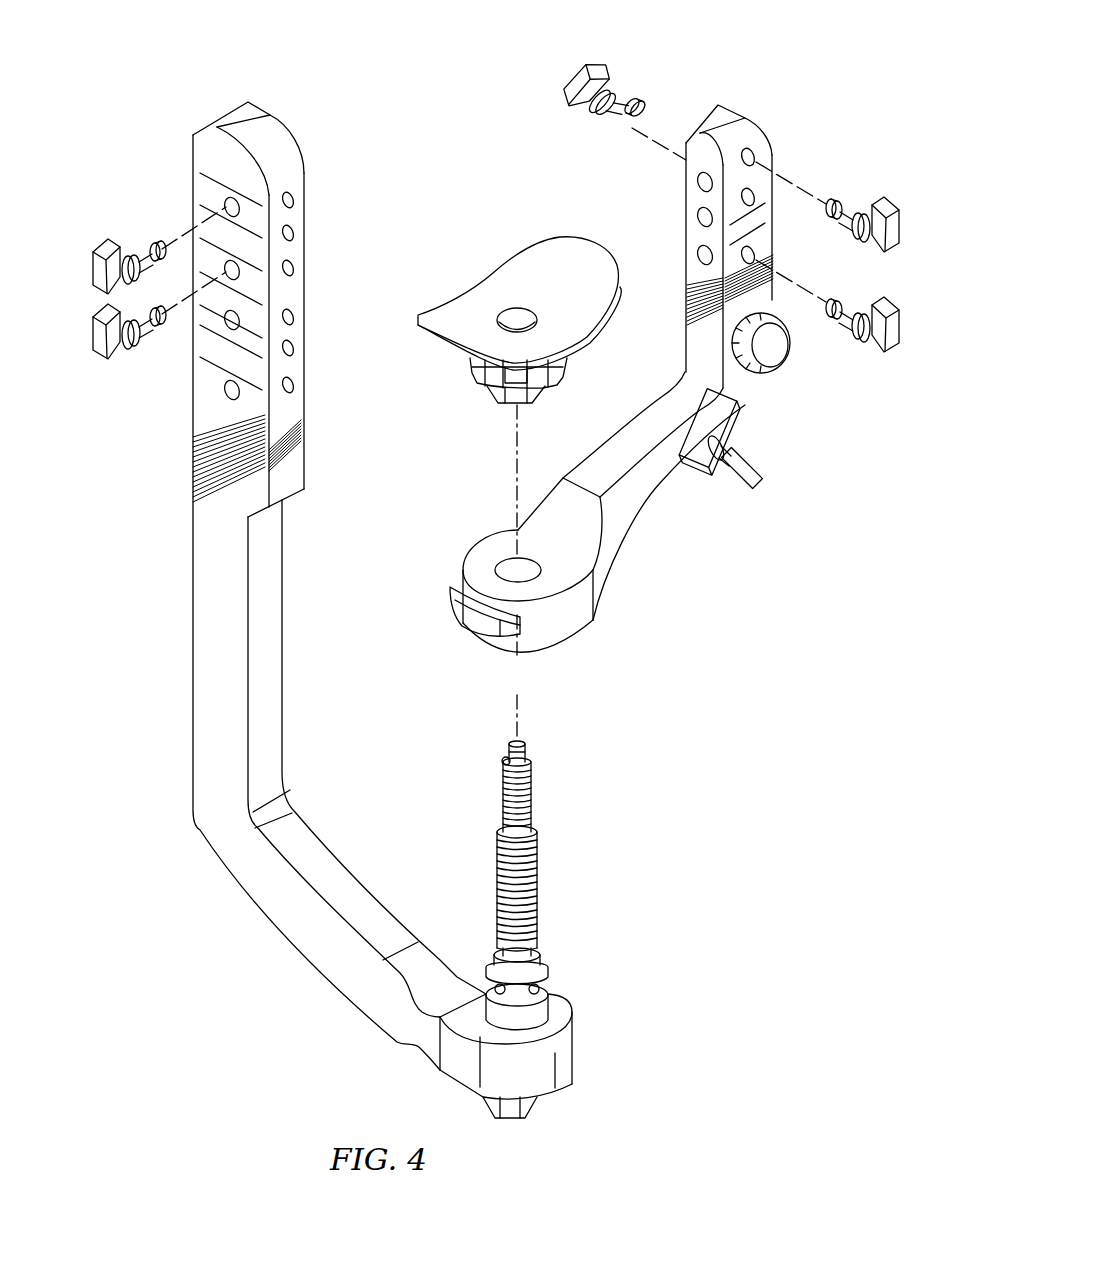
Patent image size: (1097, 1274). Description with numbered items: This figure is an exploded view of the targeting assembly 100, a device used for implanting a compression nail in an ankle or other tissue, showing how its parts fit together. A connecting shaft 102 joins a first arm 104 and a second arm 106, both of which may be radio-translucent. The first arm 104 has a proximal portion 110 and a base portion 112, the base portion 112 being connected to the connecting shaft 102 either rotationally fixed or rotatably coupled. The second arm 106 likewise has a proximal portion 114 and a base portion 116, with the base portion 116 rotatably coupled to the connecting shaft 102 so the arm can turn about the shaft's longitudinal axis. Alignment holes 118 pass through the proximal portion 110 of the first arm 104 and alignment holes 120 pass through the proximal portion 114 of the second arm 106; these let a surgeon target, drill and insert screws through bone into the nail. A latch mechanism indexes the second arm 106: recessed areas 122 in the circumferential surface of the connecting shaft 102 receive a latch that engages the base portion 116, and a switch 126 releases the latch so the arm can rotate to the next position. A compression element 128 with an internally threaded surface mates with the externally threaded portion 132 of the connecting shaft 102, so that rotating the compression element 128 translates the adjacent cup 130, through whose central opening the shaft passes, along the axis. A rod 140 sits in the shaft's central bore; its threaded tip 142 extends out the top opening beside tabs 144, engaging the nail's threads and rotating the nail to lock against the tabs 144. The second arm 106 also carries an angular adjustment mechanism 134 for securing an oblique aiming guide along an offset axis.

The targeting assembly 100 is at (768, 62).
The connecting shaft 102 is at (545, 777).
The first arm 104 is at (205, 402).
The second arm 106 is at (692, 282).
The proximal portion of the first arm 110 is at (187, 178).
The base portion of the first arm 112 is at (576, 1060).
The proximal portion of the second arm 114 is at (696, 116).
The base portion of the second arm 116 is at (576, 640).
The alignment hole 118 is at (298, 204).
The alignment hole 120 is at (698, 185).
The recessed area 122 is at (490, 984).
The switch 126 is at (461, 611).
The compression element 128 is at (470, 380).
The cup 130 is at (471, 313).
The externally threaded portion 132 is at (538, 867).
The angular adjustment mechanism 134 is at (775, 348).
The rod 140 is at (510, 1118).
The tip 142 is at (524, 744).
The tabs 144 is at (502, 757).